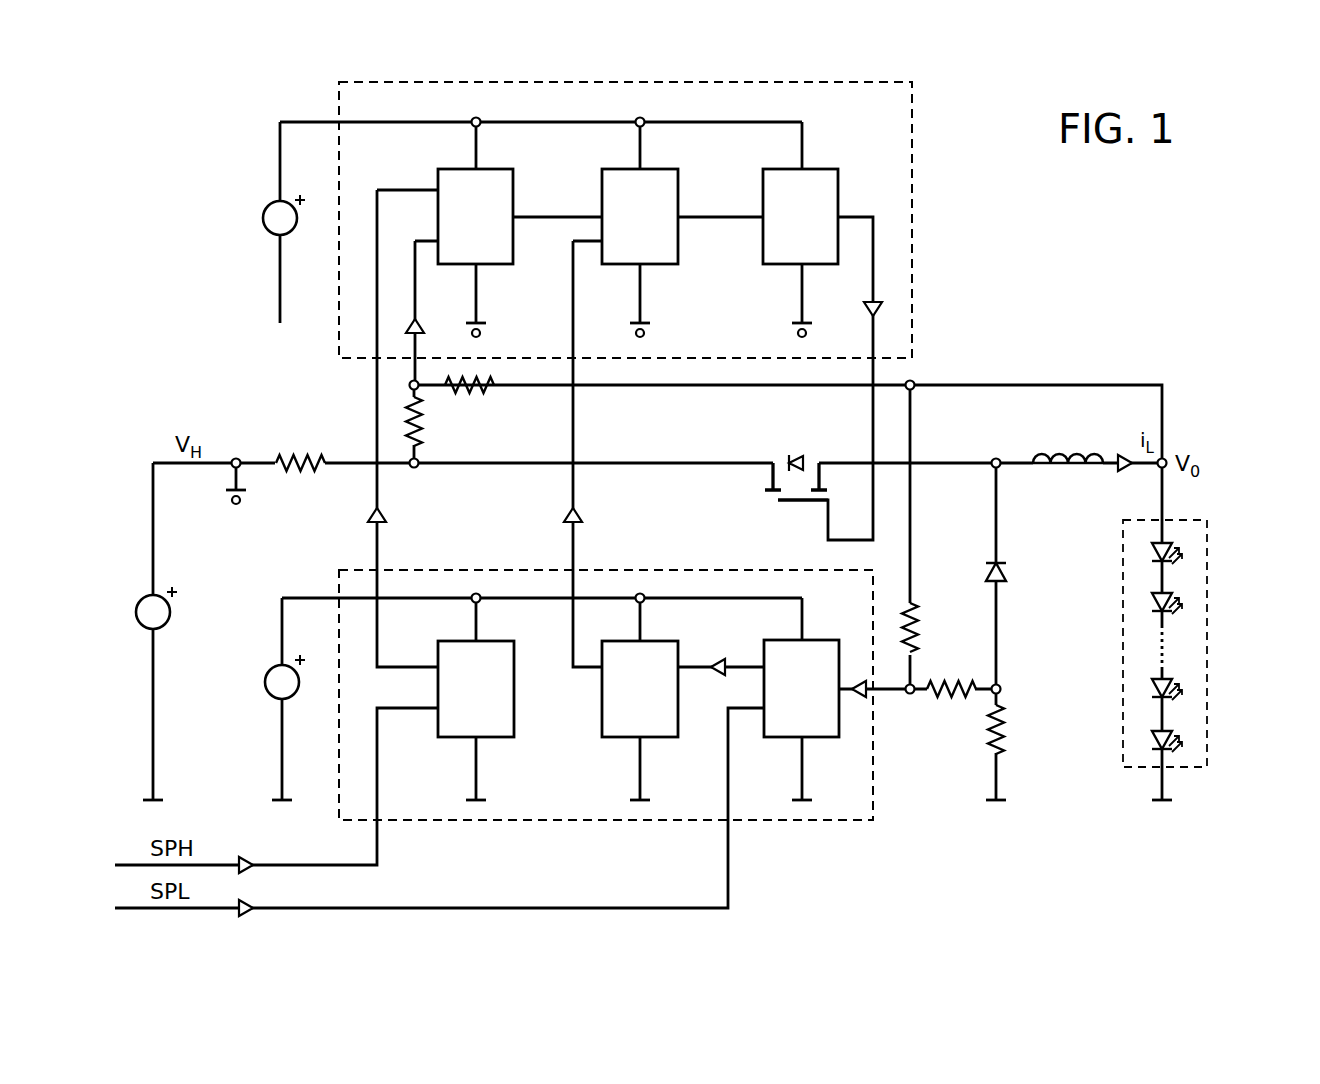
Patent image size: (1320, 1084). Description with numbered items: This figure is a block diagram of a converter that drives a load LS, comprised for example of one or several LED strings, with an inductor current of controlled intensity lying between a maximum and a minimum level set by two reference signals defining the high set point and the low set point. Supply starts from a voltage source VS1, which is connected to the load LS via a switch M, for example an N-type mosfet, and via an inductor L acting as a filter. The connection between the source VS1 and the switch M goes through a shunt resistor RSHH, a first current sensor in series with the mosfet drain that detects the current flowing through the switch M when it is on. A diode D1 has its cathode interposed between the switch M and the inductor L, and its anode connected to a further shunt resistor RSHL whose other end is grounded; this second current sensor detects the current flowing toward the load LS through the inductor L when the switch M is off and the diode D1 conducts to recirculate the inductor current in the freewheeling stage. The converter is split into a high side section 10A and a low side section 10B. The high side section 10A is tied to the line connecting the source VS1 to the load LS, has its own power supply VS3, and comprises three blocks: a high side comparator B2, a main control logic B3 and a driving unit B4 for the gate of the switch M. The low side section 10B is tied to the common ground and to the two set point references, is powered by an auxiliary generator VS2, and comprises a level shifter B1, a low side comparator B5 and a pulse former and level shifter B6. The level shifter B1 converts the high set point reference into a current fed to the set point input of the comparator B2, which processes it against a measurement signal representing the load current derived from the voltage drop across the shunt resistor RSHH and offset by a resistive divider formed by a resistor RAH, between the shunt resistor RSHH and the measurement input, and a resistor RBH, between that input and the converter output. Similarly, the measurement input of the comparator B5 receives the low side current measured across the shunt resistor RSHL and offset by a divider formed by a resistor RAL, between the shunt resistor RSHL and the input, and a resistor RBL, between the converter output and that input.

The high side section 10A is at (900, 176).
The low side section 10B is at (818, 822).
The level shifter B1 is at (514, 650).
The high side comparator B2 is at (513, 178).
The main control logic B3 is at (678, 180).
The driving unit of switch M B4 is at (838, 178).
The low side comparator B5 is at (839, 648).
The pulse former and level shifter B6 is at (678, 655).
The voltage source VS1 is at (166, 622).
The auxiliary generator VS2 is at (294, 691).
The auxiliary generator VS3 is at (292, 222).
The shunt resistor RSHH is at (296, 456).
The resistor RBH is at (478, 390).
The resistor RAH is at (422, 422).
The resistor RBL is at (918, 636).
The resistor RAL is at (955, 694).
The shunt resistor RSHL is at (1004, 722).
The switch M is at (766, 500).
The inductor L is at (1062, 436).
The diode D1 is at (1006, 570).
The load LS is at (1210, 656).